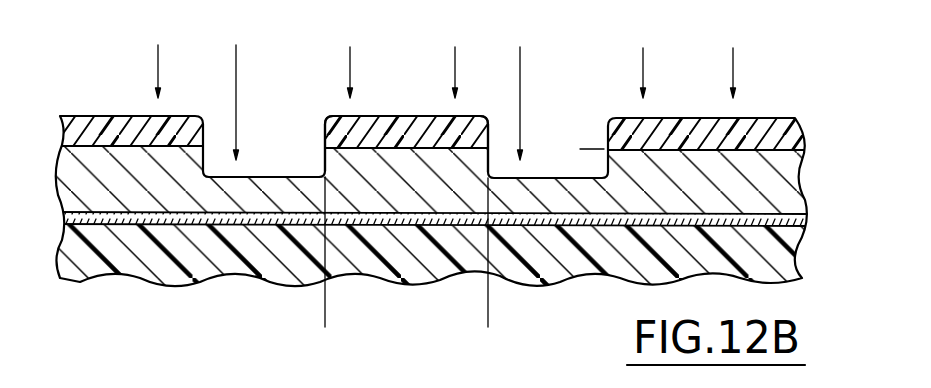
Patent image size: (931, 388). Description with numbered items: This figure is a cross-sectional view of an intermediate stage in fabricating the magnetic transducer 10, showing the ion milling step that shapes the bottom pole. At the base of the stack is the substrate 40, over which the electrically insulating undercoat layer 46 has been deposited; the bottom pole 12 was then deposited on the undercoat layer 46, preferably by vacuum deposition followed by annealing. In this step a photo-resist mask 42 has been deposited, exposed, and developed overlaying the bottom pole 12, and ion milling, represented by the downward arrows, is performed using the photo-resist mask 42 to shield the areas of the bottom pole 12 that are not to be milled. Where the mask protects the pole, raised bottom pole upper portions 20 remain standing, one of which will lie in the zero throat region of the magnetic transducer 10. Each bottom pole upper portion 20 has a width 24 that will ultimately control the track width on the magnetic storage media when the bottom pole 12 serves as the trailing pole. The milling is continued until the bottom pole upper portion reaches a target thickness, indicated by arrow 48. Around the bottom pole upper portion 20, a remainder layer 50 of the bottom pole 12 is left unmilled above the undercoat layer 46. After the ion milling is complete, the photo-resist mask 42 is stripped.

The magnetic transducer 10 is at (584, 38).
The bottom pole 12 is at (800, 181).
The bottom pole upper portion 20 is at (332, 160).
The width 24 is at (488, 319).
The substrate 40 is at (786, 260).
The photo-resist mask 42 is at (797, 136).
The undercoat layer 46 is at (798, 223).
The arrow indicating bottom pole upper portion thickness 48 is at (591, 140).
The remainder layer 50 is at (282, 204).